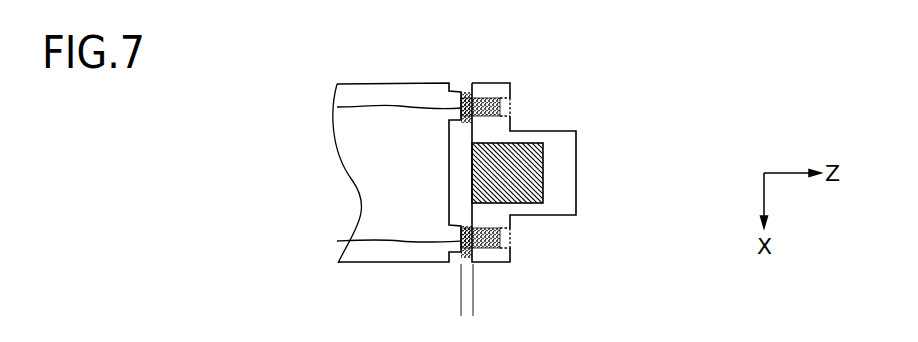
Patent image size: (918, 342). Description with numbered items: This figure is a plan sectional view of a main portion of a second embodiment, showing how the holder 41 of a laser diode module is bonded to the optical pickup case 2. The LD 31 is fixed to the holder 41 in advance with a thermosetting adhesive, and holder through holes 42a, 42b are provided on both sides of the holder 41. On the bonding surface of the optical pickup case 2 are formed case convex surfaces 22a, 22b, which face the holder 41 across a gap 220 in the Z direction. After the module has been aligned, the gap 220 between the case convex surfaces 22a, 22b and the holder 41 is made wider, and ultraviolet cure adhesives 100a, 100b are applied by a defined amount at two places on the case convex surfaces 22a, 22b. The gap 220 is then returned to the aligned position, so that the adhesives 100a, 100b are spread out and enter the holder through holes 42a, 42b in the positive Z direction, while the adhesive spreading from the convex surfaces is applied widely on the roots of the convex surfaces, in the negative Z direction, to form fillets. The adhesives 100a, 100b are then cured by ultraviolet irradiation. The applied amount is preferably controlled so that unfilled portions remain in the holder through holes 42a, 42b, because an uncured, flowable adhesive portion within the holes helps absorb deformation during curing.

The optical pickup case 2 is at (357, 190).
The case convex surface 22a is at (337, 107).
The case convex surface 22b is at (337, 241).
The LD 31 is at (543, 187).
The holder 41 is at (567, 143).
The holder through hole 42a is at (512, 107).
The holder through hole 42b is at (512, 238).
The ultraviolet cure adhesive 100a is at (481, 98).
The ultraviolet cure adhesive 100b is at (490, 250).
The gap 220 is at (473, 305).